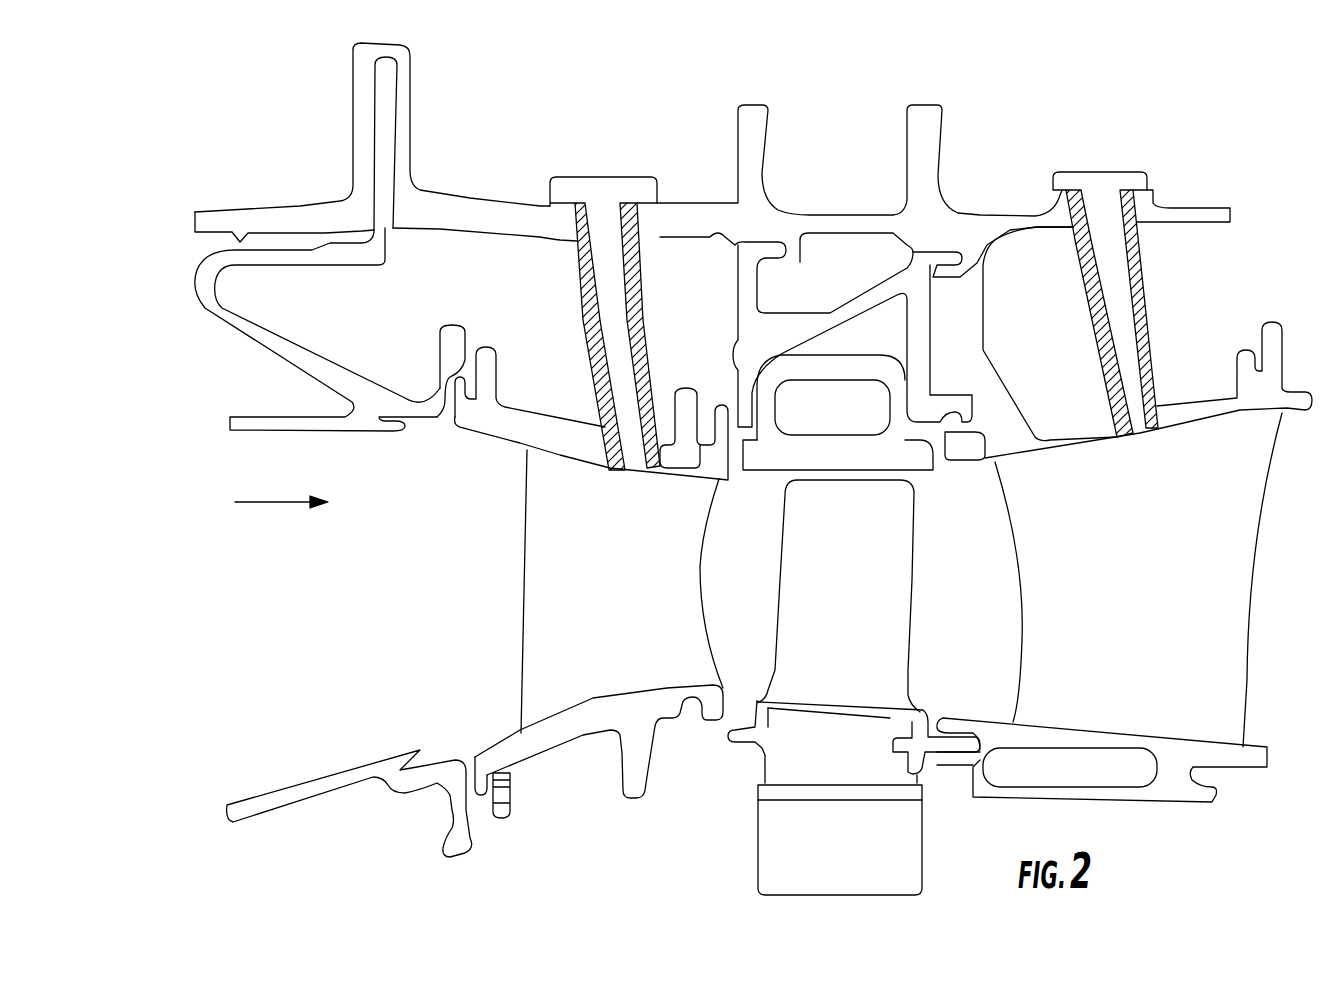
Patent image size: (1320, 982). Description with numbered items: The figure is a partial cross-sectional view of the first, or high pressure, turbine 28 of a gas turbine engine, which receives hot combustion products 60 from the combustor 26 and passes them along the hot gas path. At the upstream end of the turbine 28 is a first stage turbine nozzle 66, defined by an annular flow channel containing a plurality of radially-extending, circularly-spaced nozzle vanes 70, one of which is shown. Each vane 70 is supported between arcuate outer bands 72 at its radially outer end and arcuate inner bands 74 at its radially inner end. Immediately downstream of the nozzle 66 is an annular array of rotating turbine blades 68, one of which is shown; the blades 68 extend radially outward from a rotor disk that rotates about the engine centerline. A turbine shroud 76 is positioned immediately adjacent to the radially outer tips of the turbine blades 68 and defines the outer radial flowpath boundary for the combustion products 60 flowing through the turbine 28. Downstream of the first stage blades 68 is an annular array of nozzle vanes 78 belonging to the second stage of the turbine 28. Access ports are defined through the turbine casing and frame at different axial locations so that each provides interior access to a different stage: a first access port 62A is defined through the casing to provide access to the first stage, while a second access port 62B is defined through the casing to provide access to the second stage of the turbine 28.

The combustor 26 is at (285, 788).
The first (high pressure) turbine 28 is at (672, 88).
The combustion products 60 is at (262, 502).
The first access port 62A is at (590, 175).
The second access port 62B is at (1095, 170).
The first stage turbine nozzle 66 is at (516, 581).
The turbine blades 68 is at (851, 601).
The nozzle vanes 70 is at (620, 621).
The arcuate outer bands 72 is at (552, 423).
The arcuate inner bands 74 is at (548, 738).
The turbine shroud 76 is at (868, 372).
The second stage nozzle vanes 78 is at (1129, 577).